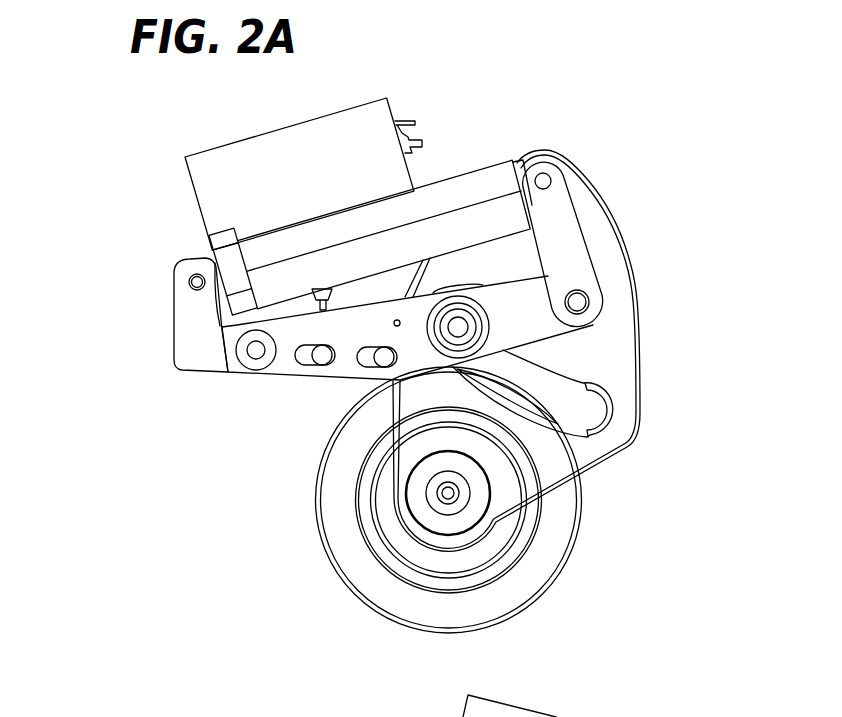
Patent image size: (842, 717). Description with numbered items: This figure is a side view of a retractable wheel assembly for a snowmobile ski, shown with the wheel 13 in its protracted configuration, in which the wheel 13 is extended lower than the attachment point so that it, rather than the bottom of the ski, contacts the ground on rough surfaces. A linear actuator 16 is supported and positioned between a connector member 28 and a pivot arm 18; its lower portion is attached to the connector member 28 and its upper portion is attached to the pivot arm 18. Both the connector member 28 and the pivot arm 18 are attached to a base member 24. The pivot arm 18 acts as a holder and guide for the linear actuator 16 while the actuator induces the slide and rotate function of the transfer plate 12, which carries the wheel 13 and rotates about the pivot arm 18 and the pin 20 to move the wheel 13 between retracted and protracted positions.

The transfer plate 12 is at (449, 424).
The wheel 13 is at (421, 624).
The linear actuator 16 is at (266, 187).
The pivot arm 18 is at (577, 230).
The pin 20 is at (543, 178).
The base member 24 is at (382, 340).
The connector member 28 is at (193, 320).